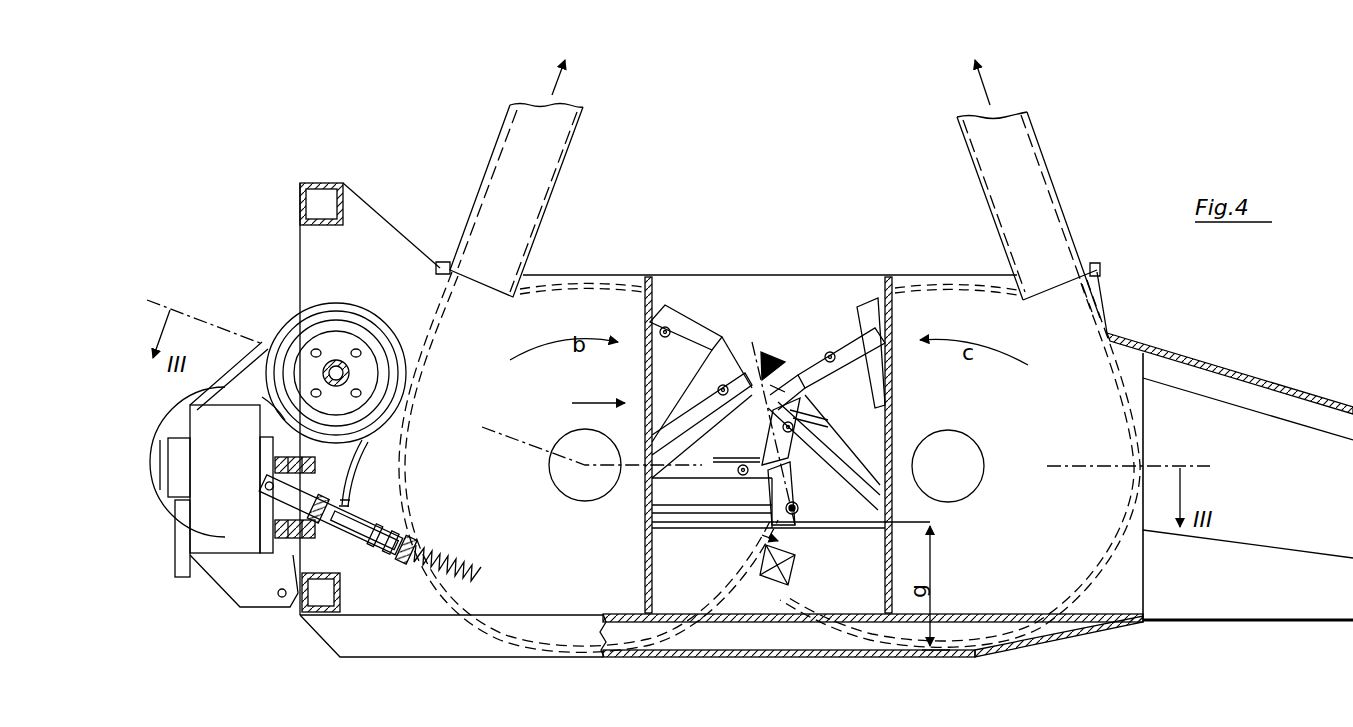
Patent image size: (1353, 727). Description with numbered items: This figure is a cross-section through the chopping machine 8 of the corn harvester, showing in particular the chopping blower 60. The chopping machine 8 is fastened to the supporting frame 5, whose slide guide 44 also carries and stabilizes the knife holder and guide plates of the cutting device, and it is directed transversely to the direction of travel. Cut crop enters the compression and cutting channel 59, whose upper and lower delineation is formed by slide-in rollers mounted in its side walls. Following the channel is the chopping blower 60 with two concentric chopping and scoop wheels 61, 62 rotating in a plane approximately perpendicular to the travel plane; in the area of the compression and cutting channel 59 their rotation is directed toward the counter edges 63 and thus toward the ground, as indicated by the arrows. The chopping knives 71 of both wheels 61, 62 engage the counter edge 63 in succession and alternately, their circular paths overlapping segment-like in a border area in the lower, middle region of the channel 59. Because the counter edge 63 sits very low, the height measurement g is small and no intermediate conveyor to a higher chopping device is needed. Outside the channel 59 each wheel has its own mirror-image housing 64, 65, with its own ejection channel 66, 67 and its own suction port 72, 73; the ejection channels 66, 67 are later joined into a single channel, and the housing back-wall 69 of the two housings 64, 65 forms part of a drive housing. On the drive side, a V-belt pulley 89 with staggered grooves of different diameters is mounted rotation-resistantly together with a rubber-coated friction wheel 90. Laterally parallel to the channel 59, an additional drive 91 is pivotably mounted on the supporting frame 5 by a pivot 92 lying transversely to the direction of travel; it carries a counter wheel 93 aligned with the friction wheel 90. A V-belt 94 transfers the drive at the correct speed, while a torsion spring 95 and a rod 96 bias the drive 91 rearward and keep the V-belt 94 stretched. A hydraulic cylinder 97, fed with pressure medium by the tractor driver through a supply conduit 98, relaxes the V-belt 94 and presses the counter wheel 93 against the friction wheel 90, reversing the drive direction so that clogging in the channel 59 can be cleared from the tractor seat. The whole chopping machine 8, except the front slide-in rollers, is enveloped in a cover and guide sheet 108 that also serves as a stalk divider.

The supporting frame 5 is at (332, 595).
The chopping machine 8 is at (738, 192).
The slide guide 44 is at (848, 637).
The compression and cutting channel 59 is at (581, 401).
The chopping blower 60 is at (783, 657).
The chopping and scoop wheel 61 is at (712, 366).
The chopping and scoop wheel 62 is at (853, 338).
The counter edge 63 is at (840, 523).
The housing 64 is at (585, 552).
The housing 65 is at (996, 556).
The ejection channel 66 is at (540, 172).
The ejection channel 67 is at (990, 162).
The housing top wall 69 is at (670, 283).
The chopping knives 71 is at (808, 375).
The suction port 72 is at (562, 466).
The suction port 73 is at (968, 452).
The V-belt pulley 89 is at (355, 332).
The friction wheel 90 is at (277, 290).
The additional drive 91 is at (217, 520).
The pivot 92 is at (283, 597).
The counter wheel 93 is at (172, 428).
The V-belt 94 is at (258, 362).
The torsion spring 95 is at (455, 548).
The rod 96 is at (303, 494).
The hydraulic cylinder 97 is at (365, 519).
The supply conduit 98 is at (360, 475).
The cover and guide sheet 108 is at (1247, 483).